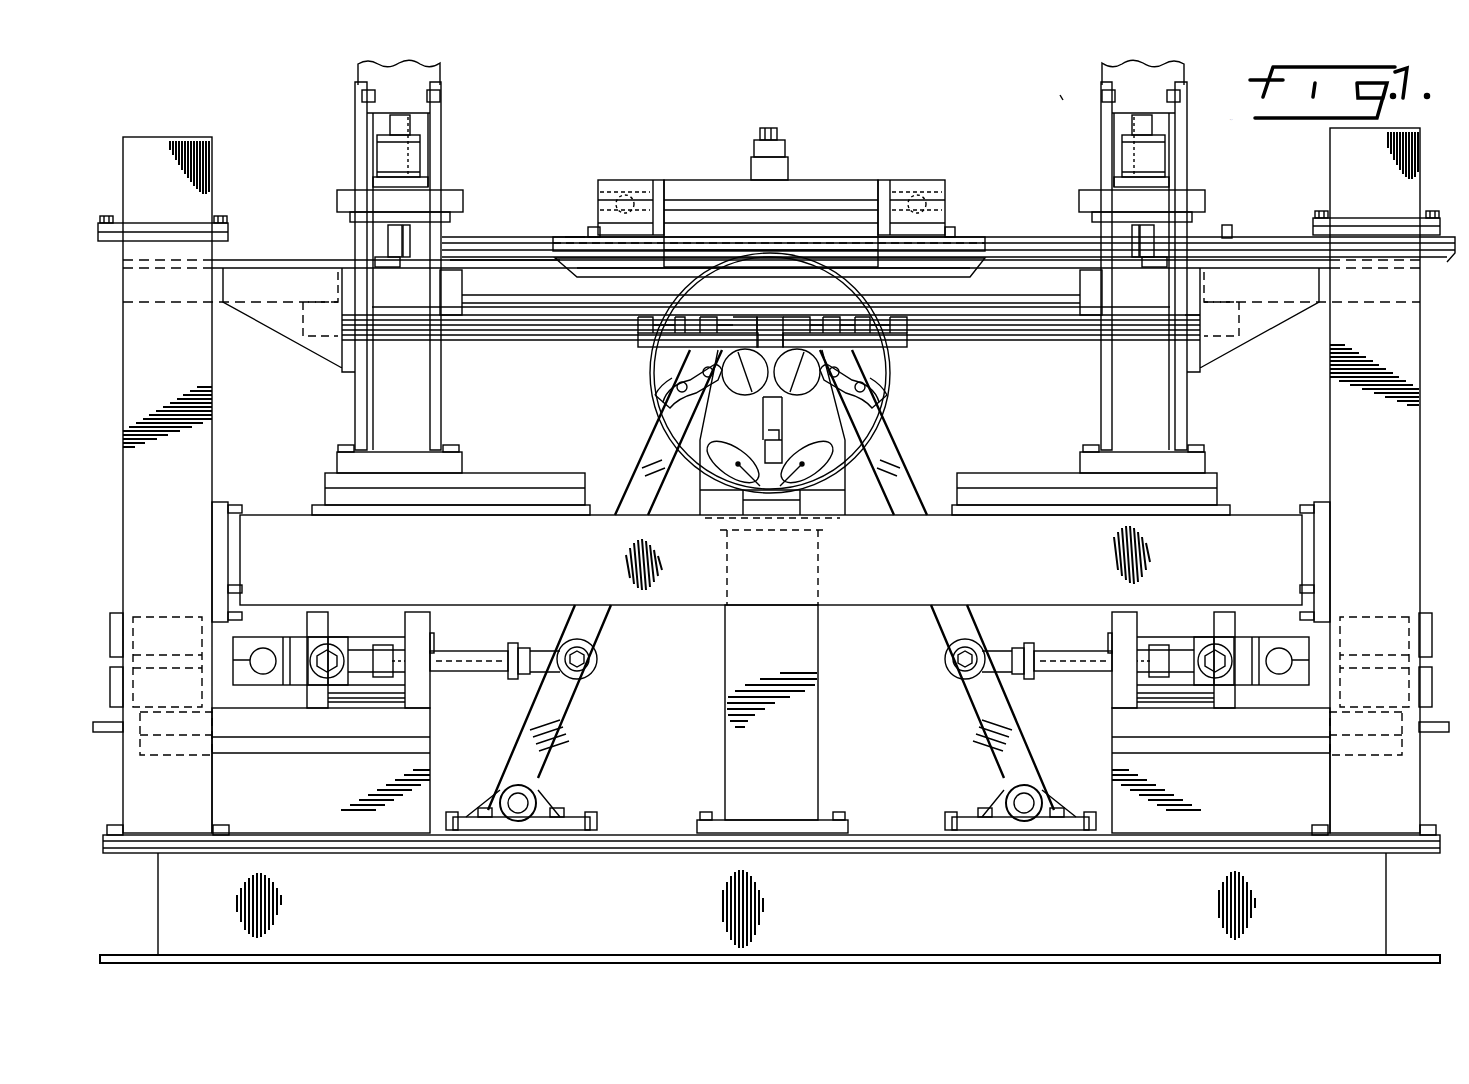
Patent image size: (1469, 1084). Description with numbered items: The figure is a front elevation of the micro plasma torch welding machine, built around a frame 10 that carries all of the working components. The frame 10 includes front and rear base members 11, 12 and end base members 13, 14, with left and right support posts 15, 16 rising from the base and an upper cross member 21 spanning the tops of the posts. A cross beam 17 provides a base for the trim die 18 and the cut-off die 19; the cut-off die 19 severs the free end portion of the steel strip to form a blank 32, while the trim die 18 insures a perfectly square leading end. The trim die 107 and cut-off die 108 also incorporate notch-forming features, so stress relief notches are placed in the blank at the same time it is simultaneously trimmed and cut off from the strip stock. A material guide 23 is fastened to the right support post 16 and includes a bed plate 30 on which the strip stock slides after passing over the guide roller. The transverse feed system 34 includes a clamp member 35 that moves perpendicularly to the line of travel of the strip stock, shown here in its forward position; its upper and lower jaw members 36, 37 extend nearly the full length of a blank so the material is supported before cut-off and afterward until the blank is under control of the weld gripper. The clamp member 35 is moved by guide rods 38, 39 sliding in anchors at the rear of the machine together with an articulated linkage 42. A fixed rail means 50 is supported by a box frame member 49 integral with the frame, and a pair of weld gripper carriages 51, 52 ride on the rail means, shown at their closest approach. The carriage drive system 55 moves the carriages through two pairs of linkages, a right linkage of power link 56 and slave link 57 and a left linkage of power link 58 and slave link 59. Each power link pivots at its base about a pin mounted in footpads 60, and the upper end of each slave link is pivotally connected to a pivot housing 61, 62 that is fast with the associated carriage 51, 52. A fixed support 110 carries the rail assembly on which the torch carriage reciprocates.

The frame 10 is at (1076, 130).
The front base member 11 is at (880, 865).
The rear base member 12 is at (520, 272).
The end base member 13 is at (202, 486).
The end base member 14 is at (1333, 481).
The left support post 15 is at (212, 452).
The right support post 16 is at (1330, 425).
The cross beam 17 is at (697, 598).
The trim die 18 is at (430, 287).
The cut-off die 19 is at (1110, 287).
The upper cross member 21 is at (238, 118).
The material guide 23 is at (1457, 229).
The bed plate 30 is at (835, 271).
The blank 32 is at (656, 432).
The transverse feed system 34 is at (810, 191).
The clamp member 35 is at (582, 224).
The upper jaw member 36 is at (983, 240).
The lower jaw member 37 is at (962, 262).
The guide rod 38 is at (628, 194).
The guide rod 39 is at (912, 194).
The articulated linkage 42 is at (782, 142).
The box frame member 49 is at (592, 292).
The fixed rail means 50 is at (1010, 341).
The weld gripper carriage 51 is at (911, 348).
The weld gripper carriage 52 is at (645, 353).
The carriage drive system 55 is at (118, 623).
The power link 56 is at (996, 742).
The slave link 57 is at (882, 398).
The power link 58 is at (567, 718).
The slave link 59 is at (660, 398).
The footpads 60 is at (545, 800).
The pivot housing 61 is at (743, 389).
The pivot housing 62 is at (797, 389).
The trim die 107 is at (338, 200).
The cut-off die 108 is at (1205, 200).
The fixed support 110 is at (822, 735).